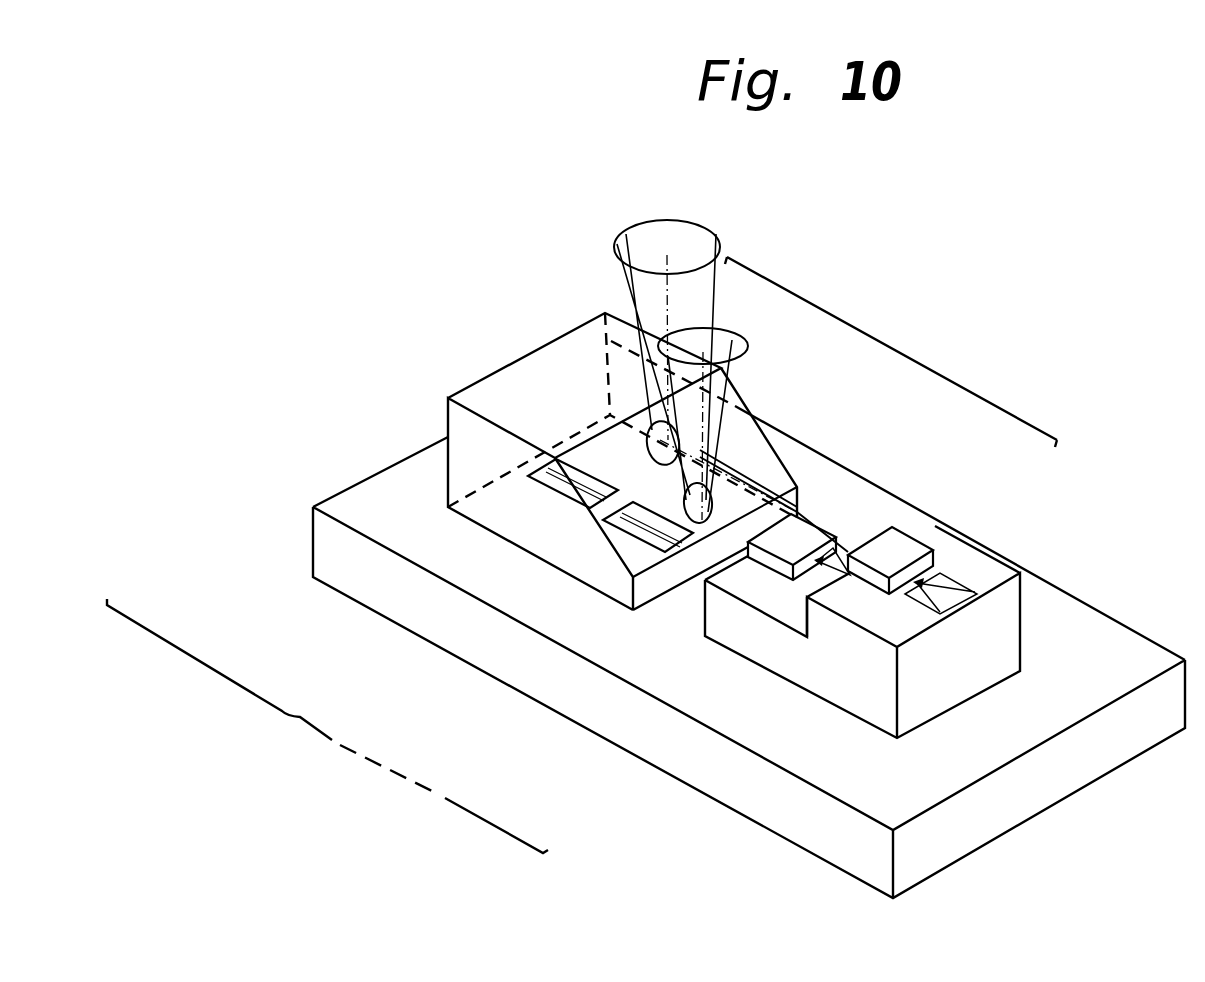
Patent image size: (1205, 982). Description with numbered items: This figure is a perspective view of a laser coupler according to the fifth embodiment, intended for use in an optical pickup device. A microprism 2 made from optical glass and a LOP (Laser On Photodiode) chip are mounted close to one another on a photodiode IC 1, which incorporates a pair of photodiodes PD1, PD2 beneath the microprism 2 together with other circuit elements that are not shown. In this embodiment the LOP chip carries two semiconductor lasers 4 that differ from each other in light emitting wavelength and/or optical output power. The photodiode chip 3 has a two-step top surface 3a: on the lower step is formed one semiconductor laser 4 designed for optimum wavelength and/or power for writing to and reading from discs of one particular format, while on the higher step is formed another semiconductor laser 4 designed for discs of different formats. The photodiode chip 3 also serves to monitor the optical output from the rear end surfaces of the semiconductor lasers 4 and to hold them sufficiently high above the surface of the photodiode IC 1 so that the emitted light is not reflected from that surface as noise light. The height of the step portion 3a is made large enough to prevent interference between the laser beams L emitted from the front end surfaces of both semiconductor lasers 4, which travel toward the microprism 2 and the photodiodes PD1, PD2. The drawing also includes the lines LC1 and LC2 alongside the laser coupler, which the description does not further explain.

The photodiode IC 1 is at (582, 707).
The microprism 2 is at (493, 385).
The photodiode chip 3 is at (877, 620).
The two-step top surface 3a is at (803, 610).
The semiconductor laser 4 is at (910, 548).
The photodiode PD1 is at (629, 532).
The photodiode PD2 is at (549, 492).
The laser beam L is at (733, 527).
The reference line LC1 is at (893, 345).
The reference line LC2 is at (290, 717).